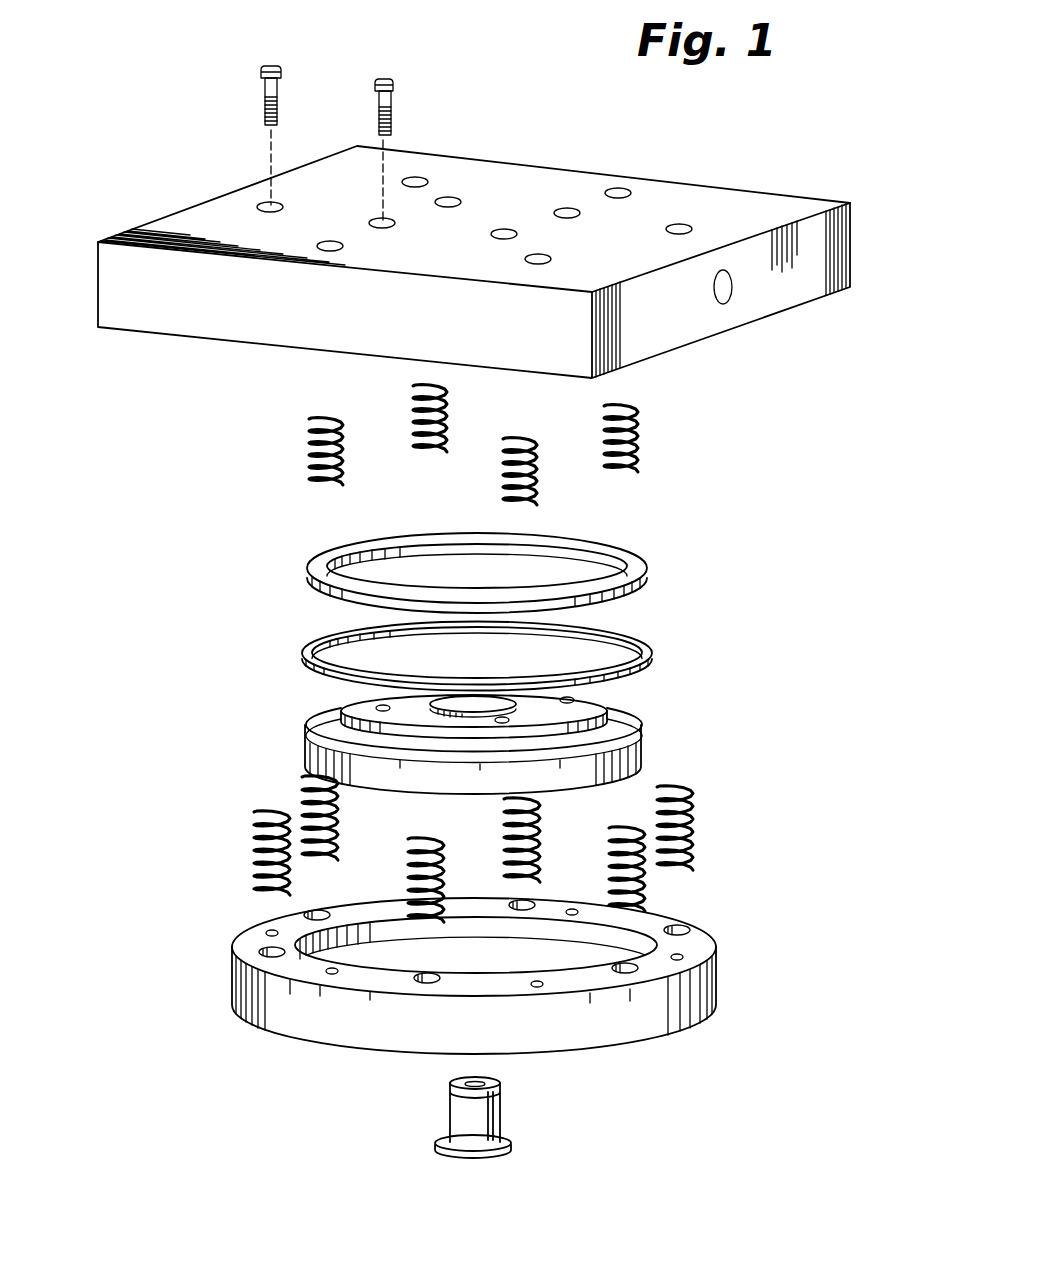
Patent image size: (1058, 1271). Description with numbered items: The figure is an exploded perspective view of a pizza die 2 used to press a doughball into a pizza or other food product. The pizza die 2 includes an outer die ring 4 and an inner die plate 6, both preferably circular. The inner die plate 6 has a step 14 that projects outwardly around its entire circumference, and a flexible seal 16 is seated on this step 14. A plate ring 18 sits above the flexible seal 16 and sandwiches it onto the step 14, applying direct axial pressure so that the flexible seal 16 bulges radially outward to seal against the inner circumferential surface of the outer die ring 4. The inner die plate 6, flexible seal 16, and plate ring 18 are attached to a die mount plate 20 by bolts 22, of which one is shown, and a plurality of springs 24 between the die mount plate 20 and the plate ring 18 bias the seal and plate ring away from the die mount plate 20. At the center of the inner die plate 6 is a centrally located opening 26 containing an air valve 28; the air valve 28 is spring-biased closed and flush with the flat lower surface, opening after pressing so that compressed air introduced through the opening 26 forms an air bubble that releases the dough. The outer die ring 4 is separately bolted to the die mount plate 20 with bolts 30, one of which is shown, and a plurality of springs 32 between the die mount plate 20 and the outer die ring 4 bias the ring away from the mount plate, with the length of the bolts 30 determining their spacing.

The pizza die 2 is at (784, 699).
The outer die ring 4 is at (232, 978).
The inner die plate 6 is at (424, 693).
The step 14 is at (645, 730).
The flexible seal 16 is at (650, 665).
The plate ring 18 is at (306, 567).
The die mount plate 20 is at (98, 278).
The bolts 22 is at (394, 92).
The springs 24 is at (642, 440).
The centrally located opening 26 is at (487, 707).
The air valve 28 is at (510, 1142).
The bolts 30 is at (259, 75).
The springs 32 is at (697, 823).